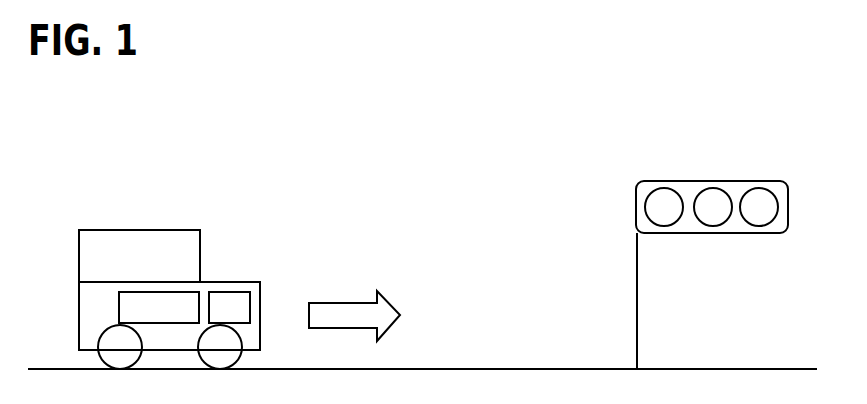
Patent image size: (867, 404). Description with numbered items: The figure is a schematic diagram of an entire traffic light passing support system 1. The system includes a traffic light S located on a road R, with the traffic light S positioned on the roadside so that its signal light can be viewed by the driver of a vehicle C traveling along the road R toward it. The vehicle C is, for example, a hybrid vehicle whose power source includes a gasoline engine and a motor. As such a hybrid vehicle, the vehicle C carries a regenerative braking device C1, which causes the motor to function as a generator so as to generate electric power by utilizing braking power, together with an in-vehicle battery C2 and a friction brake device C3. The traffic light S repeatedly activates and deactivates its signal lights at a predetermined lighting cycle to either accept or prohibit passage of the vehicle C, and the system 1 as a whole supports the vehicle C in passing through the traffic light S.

The traffic light passing support system 1 is at (800, 116).
The vehicle C is at (160, 272).
The regenerative braking device C1 is at (159, 307).
The in-vehicle battery C2 is at (175, 308).
The friction brake device C3 is at (229, 307).
The traffic light S is at (748, 182).
The road R is at (767, 369).